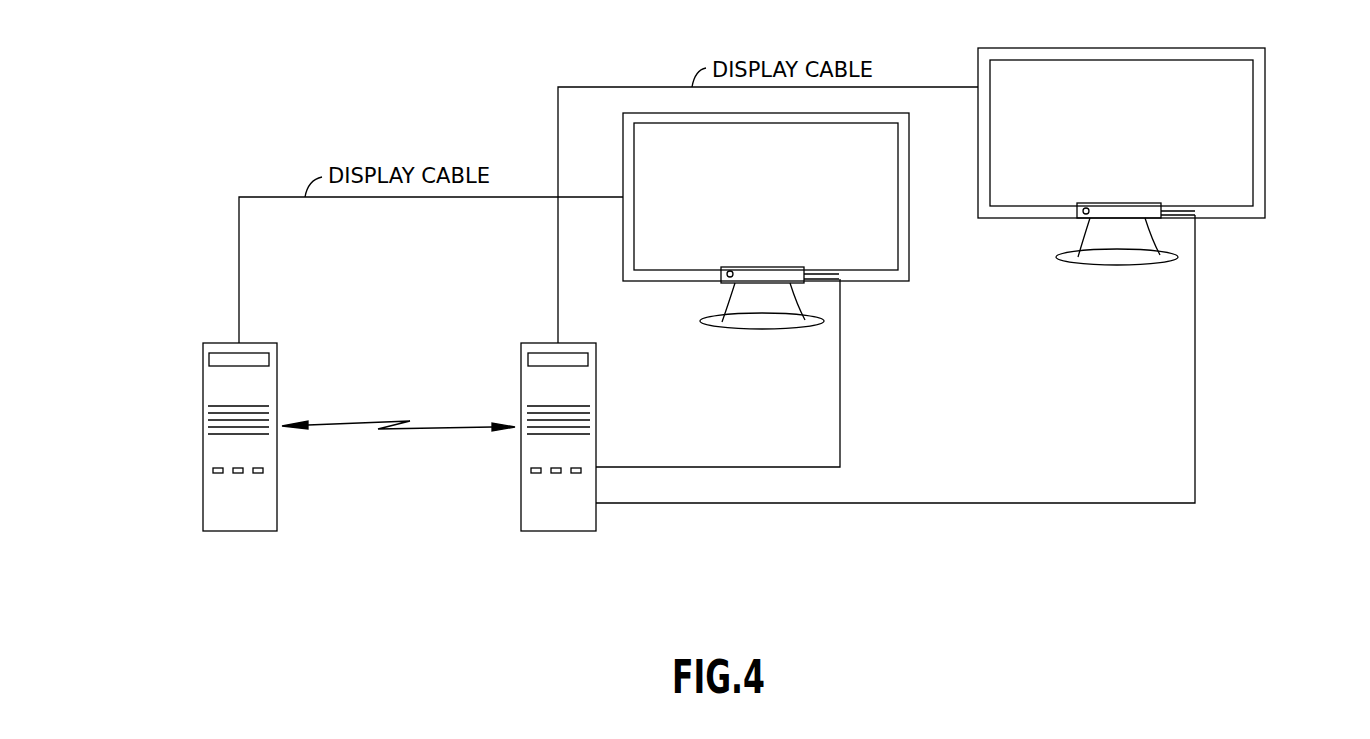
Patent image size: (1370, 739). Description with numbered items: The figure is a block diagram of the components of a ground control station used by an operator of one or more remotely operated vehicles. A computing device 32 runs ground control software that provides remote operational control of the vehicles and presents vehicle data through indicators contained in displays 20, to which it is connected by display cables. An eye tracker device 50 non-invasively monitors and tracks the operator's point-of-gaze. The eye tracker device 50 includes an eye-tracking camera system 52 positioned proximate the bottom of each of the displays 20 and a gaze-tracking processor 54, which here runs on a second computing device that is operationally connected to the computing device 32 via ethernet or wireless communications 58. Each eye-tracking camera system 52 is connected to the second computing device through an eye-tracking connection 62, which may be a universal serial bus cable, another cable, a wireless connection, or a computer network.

The display 20 is at (890, 150).
The computing device 32 is at (213, 457).
The eye tracker device 50 is at (792, 267).
The eye-tracking camera system 52 is at (726, 283).
The gaze-tracking processor 54 is at (577, 415).
The wireless communications 58 is at (400, 430).
The eye-tracking connection 62 is at (757, 503).